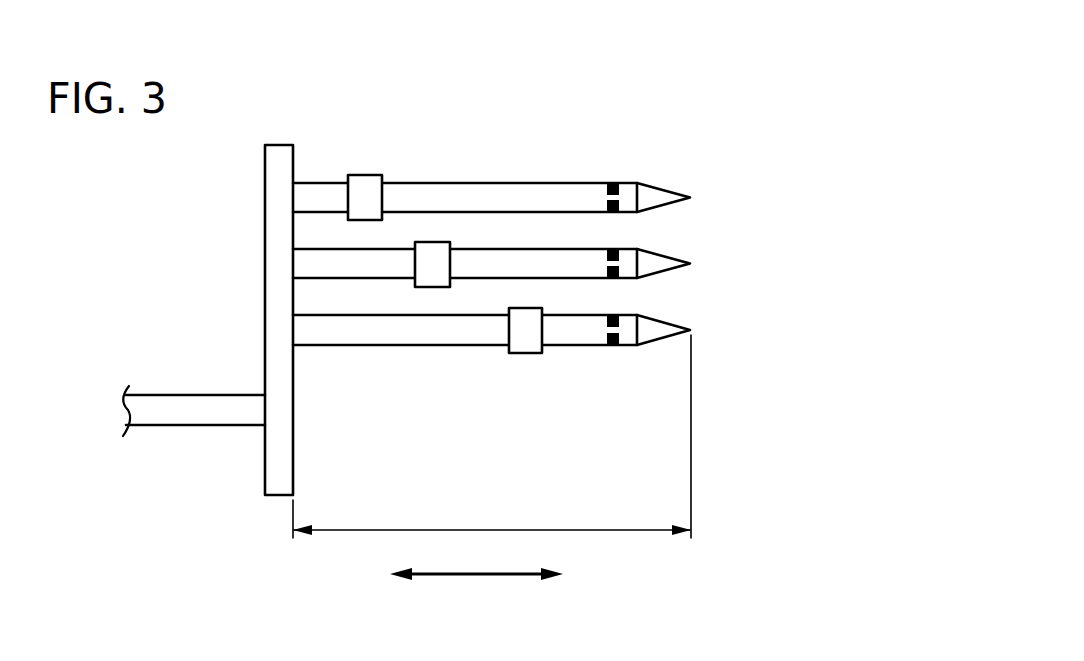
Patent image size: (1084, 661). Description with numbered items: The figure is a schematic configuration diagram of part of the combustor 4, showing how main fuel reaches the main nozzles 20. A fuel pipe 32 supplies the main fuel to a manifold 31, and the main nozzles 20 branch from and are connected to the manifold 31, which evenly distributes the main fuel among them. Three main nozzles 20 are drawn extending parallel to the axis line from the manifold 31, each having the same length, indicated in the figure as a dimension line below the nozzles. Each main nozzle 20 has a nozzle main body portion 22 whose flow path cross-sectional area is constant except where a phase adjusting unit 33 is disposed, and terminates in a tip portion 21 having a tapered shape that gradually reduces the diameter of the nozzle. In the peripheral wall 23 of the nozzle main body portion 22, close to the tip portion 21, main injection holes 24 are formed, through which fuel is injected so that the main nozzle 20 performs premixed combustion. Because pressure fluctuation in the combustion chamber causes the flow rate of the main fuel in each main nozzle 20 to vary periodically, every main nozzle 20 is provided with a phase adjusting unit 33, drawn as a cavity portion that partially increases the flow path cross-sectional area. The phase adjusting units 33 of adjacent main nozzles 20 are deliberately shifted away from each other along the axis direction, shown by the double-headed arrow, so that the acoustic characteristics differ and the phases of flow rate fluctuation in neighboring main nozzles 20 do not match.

The combustor 4 is at (760, 116).
The main nozzle 20 is at (529, 261).
The tip portion 21 is at (667, 185).
The nozzle main body portion 22 is at (443, 188).
The peripheral wall 23 is at (565, 190).
The main injection hole 24 is at (612, 188).
The manifold 31 is at (283, 453).
The fuel pipe 32 is at (186, 407).
The phase adjusting unit 33 is at (364, 190).